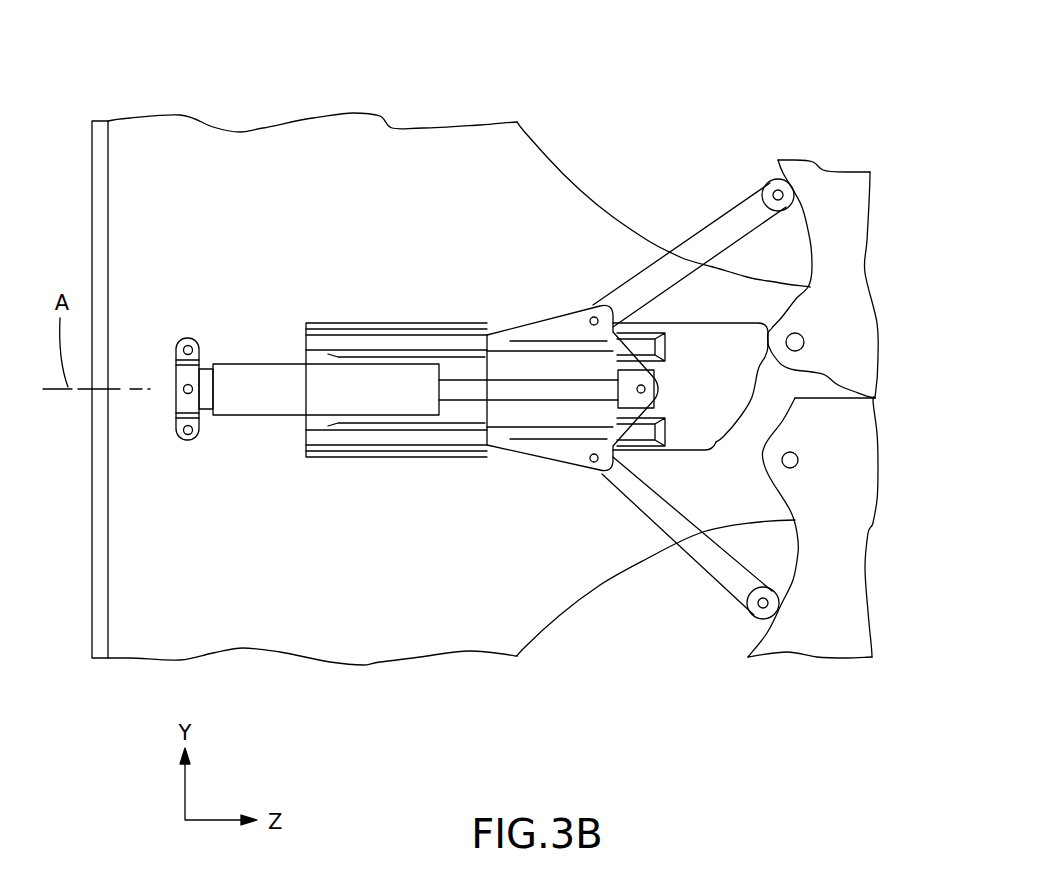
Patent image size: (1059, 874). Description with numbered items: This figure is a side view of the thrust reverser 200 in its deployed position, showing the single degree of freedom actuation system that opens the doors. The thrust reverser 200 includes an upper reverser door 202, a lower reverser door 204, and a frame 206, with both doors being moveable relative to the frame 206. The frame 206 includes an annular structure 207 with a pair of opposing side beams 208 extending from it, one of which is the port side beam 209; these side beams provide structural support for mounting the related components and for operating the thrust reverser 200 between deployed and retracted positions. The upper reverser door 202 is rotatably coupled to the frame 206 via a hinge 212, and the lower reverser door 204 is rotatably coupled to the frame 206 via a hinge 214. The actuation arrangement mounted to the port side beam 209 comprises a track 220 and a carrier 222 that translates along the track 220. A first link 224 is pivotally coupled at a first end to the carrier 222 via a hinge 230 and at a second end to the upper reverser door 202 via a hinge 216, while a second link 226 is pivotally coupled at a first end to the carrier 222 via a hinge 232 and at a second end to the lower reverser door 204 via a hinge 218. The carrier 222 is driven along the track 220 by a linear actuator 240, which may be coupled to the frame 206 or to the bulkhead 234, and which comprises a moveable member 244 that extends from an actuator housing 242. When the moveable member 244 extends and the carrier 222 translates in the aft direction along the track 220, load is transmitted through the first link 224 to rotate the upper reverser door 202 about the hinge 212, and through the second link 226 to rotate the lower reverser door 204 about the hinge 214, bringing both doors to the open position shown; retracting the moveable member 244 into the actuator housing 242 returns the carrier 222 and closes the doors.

The thrust reverser 200 is at (703, 86).
The upper reverser door 202 is at (845, 190).
The lower reverser door 204 is at (817, 637).
The frame 206 is at (243, 559).
The annular structure 207 is at (169, 256).
The pair of opposing side beams 208 is at (716, 312).
The port side beam 209 is at (712, 483).
The hinge 212 is at (803, 335).
The hinge 214 is at (794, 467).
The hinge 216 is at (774, 191).
The hinge 218 is at (760, 606).
The track 220 is at (397, 333).
The carrier 222 is at (537, 343).
The first link 224 is at (715, 237).
The second link 226 is at (700, 553).
The hinge 230 is at (594, 316).
The hinge 232 is at (594, 463).
The bulkhead 234 is at (100, 650).
The linear actuator 240 is at (288, 363).
The actuator housing 242 is at (238, 408).
The moveable member 244 is at (527, 392).